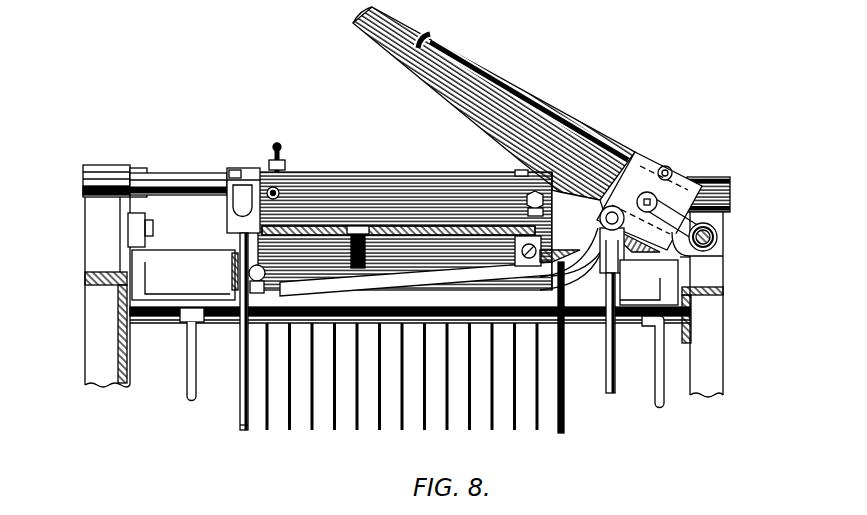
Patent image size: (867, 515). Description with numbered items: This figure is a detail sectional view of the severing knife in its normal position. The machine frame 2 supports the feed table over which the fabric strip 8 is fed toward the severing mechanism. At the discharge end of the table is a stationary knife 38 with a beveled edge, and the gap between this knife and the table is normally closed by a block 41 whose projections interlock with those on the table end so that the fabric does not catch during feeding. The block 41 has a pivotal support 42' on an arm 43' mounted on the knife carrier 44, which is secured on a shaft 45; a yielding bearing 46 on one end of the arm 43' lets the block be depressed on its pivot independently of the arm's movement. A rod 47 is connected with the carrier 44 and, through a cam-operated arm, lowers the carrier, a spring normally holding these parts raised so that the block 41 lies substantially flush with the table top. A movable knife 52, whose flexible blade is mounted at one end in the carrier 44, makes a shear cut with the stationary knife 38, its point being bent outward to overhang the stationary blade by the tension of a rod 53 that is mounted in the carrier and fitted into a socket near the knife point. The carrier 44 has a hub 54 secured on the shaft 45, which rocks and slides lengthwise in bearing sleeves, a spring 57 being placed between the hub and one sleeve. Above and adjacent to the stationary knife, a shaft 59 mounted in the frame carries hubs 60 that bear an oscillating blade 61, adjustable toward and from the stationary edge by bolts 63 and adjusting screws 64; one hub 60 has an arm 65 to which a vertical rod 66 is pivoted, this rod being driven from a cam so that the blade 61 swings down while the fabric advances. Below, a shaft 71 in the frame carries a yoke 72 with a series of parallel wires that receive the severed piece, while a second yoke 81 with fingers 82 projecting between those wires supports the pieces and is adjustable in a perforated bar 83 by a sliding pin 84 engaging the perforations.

The frame of the machine 2 is at (102, 248).
The fabric strip 8 is at (352, 228).
The stationary knife 38 is at (328, 247).
The block 41 is at (625, 160).
The pivotal support 42' is at (638, 191).
The arm 43' is at (608, 209).
The knife carrier 44 is at (663, 193).
The shaft 45 is at (723, 220).
The yielding bearing 46 is at (362, 250).
The rod 47 is at (660, 350).
The movable knife 52 is at (565, 120).
The rod 53 is at (543, 102).
The hub 54 is at (716, 246).
The spring 57 is at (718, 237).
The shaft 59 is at (157, 187).
The hubs 60 is at (256, 174).
The oscillating blade 61 is at (513, 245).
The bolts 63 is at (263, 170).
The adjusting screws 64 is at (273, 148).
The arm 65 is at (246, 168).
The rod 66 is at (240, 392).
The shaft 71 is at (358, 432).
The yoke 72 is at (238, 422).
The yoke 81 is at (152, 318).
The fingers 82 is at (565, 400).
The perforated bar 83 is at (132, 320).
The sliding pin 84 is at (125, 312).